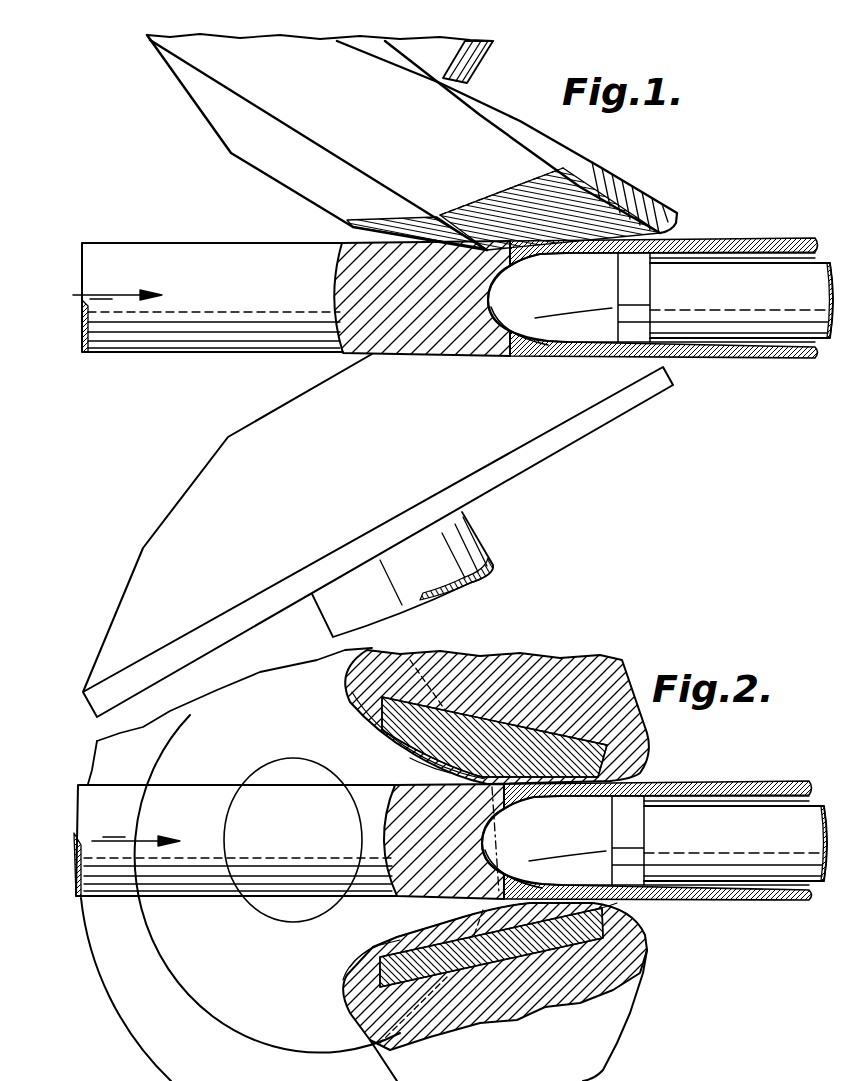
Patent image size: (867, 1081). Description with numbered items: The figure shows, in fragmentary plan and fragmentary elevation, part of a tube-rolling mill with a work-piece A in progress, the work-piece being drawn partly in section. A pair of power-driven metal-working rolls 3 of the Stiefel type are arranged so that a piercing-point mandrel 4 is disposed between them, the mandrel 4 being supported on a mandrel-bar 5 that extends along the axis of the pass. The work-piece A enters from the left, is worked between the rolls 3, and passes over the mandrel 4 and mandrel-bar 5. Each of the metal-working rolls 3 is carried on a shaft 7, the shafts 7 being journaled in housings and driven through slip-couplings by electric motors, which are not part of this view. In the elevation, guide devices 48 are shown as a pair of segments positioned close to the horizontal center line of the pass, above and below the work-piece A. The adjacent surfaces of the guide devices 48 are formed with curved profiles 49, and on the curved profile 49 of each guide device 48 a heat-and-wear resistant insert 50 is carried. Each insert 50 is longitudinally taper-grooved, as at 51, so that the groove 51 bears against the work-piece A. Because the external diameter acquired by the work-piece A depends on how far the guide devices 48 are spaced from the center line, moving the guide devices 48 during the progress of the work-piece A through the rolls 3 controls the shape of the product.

In FIG. 1, the metal-working rolls 3 is at (380, 375).
In FIG. 2, the metal-working rolls 3 is at (150, 1040).
In FIG. 1, the mandrel 4 is at (561, 289).
In FIG. 2, the mandrel 4 is at (645, 842).
In FIG. 1, the mandrel-bar 5 is at (741, 300).
In FIG. 2, the mandrel-bar 5 is at (735, 843).
In FIG. 1, the shafts 7 is at (470, 62).
In FIG. 1, the work-piece A is at (445, 279).
In FIG. 2, the work-piece A is at (443, 824).
In FIG. 2, the guide devices 48 is at (472, 667).
In FIG. 2, the curved profiles 49 is at (350, 723).
In FIG. 2, the heat-and-wear resistant insert 50 is at (533, 737).
In FIG. 2, the longitudinal taper-groove 51 is at (417, 760).